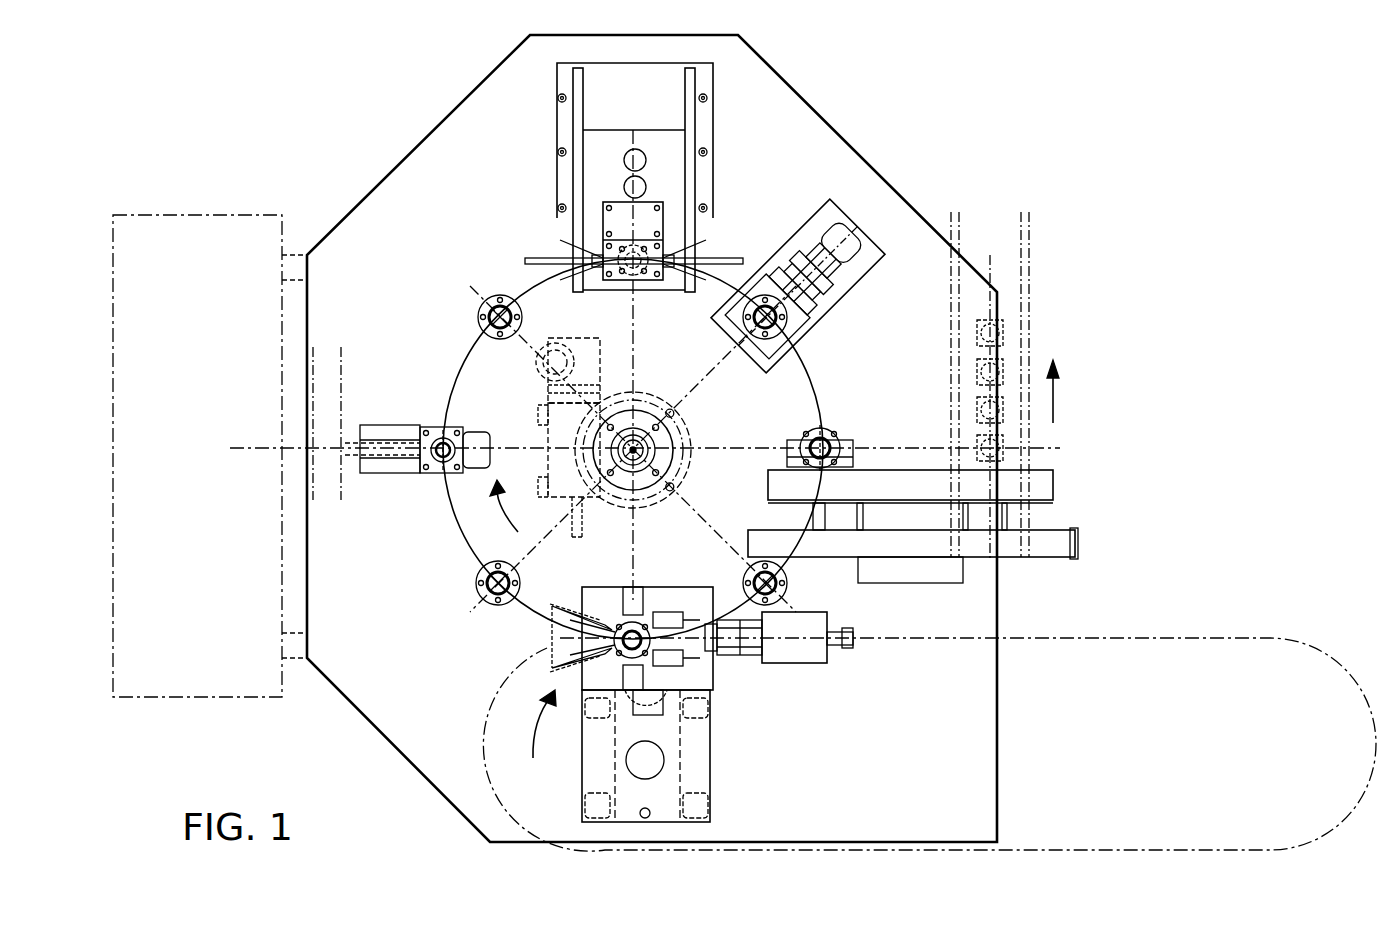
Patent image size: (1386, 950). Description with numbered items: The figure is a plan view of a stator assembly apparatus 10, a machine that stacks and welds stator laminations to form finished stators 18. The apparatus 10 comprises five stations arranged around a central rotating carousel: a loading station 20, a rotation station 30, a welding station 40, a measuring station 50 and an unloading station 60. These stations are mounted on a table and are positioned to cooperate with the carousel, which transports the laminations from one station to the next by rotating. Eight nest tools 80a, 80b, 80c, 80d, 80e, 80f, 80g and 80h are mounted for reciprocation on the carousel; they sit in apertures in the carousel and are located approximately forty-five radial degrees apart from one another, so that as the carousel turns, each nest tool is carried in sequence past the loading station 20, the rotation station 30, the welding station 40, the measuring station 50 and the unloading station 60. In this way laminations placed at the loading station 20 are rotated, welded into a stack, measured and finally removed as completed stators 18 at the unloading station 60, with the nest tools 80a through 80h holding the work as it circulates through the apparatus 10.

The stator assembly apparatus 10 is at (902, 148).
The stators 18 is at (1000, 333).
The loading station 20 is at (713, 672).
The rotation station 30 is at (390, 473).
The welding station 40 is at (700, 238).
The measuring station 50 is at (760, 270).
The unloading station 60 is at (846, 442).
The nest tool 80a is at (610, 640).
The nest tool 80b is at (485, 598).
The nest tool 80c is at (437, 437).
The nest tool 80d is at (490, 302).
The nest tool 80e is at (620, 250).
The nest tool 80f is at (798, 345).
The nest tool 80g is at (828, 425).
The nest tool 80h is at (783, 602).